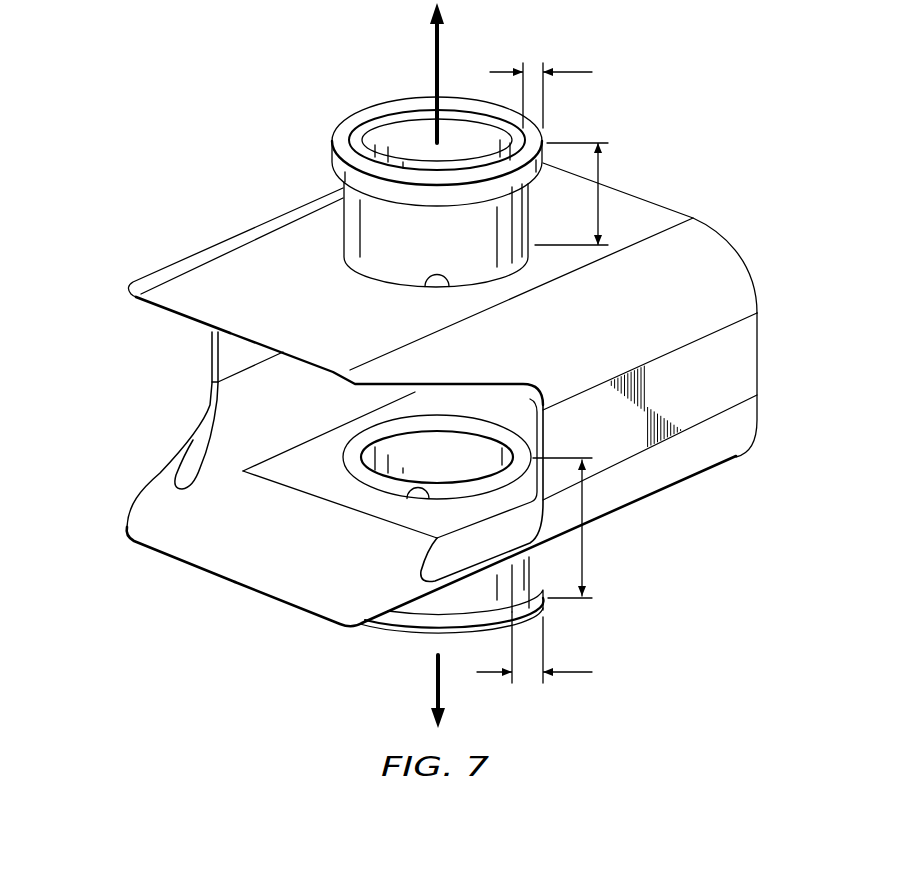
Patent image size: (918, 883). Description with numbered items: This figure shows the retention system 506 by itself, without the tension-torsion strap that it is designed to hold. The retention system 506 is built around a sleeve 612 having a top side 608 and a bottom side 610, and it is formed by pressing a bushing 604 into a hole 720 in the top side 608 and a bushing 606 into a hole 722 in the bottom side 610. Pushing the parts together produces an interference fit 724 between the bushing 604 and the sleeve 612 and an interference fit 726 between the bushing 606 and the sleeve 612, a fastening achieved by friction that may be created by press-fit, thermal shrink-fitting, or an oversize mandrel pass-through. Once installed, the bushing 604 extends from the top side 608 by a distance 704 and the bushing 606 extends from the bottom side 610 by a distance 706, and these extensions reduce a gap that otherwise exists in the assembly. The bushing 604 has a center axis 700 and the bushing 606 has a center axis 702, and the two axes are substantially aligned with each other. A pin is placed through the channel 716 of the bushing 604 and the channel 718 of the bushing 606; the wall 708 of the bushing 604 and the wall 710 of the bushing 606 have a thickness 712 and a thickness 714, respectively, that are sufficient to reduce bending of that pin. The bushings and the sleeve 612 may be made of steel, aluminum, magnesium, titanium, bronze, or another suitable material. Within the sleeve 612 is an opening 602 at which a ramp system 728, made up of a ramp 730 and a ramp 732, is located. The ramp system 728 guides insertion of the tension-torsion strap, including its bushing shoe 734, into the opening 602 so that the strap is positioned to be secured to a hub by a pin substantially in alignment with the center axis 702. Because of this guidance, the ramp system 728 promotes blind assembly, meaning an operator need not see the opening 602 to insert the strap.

The retention system 506 is at (697, 184).
The opening 602 is at (238, 489).
The bushing 604 is at (342, 107).
The bushing 606 is at (362, 638).
The top side 608 is at (237, 267).
The bottom side 610 is at (690, 483).
The sleeve 612 is at (758, 366).
The center axis 700 is at (438, 48).
The center axis 702 is at (433, 692).
The distance 704 is at (600, 168).
The distance 706 is at (583, 553).
The wall 708 is at (332, 143).
The wall 710 is at (541, 608).
The thickness 712 is at (572, 70).
The thickness 714 is at (573, 674).
The channel 716 is at (408, 137).
The channel 718 is at (482, 457).
The hole 720 is at (352, 262).
The hole 722 is at (332, 495).
The interference fit 724 is at (436, 284).
The interference fit 726 is at (418, 493).
The ramp system 728 is at (124, 328).
The ramp 730 is at (174, 309).
The ramp 732 is at (327, 599).
The bushing shoe 734 is at (201, 421).